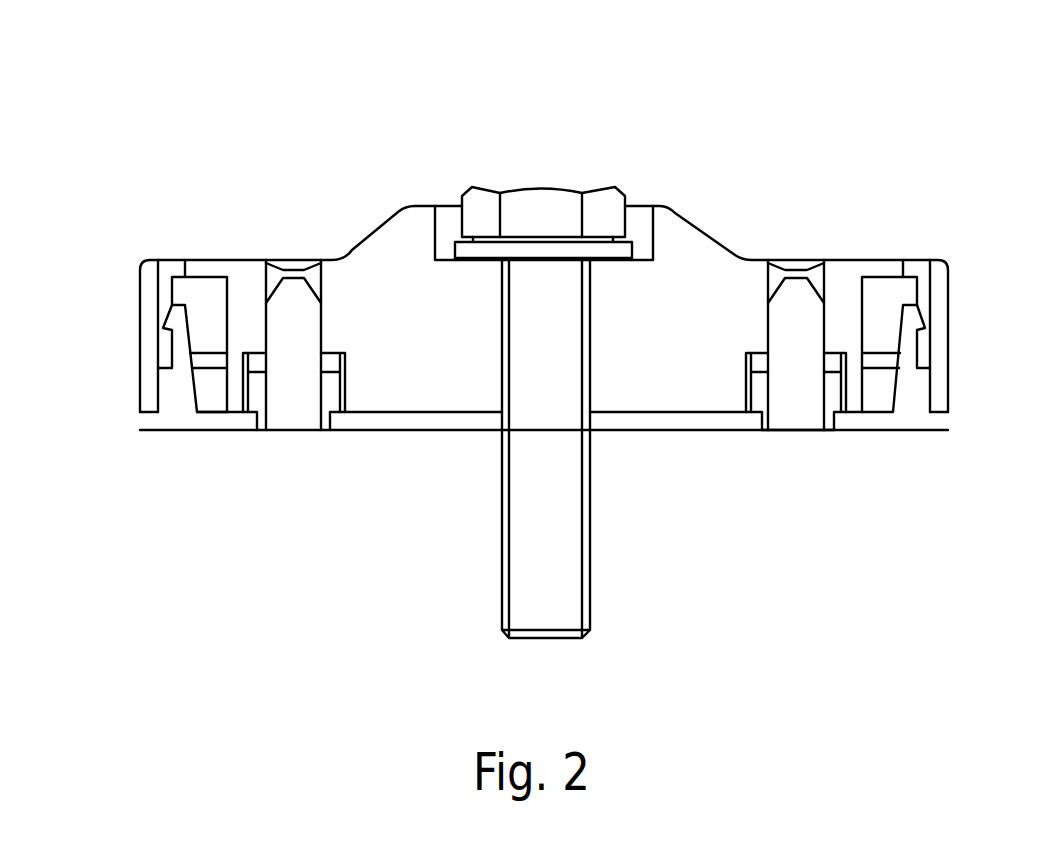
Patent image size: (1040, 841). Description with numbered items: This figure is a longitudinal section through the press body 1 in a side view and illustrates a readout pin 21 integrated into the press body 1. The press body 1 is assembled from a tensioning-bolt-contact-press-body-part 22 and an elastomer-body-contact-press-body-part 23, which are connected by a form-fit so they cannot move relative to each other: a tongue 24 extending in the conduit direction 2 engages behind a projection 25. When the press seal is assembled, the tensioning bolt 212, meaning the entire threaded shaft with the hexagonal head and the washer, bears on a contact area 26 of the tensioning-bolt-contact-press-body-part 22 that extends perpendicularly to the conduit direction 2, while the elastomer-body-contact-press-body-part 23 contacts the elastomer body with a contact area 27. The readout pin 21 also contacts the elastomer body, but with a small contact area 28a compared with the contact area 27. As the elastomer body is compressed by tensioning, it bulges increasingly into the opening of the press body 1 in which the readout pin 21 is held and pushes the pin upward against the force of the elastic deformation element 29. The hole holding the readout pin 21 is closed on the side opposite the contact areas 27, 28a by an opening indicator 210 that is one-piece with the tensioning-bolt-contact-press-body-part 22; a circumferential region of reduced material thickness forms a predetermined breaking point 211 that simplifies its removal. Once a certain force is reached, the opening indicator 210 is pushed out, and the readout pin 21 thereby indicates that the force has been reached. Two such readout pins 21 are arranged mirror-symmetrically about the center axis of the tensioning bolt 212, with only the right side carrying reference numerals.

The press body 1 is at (271, 166).
The conduit direction 2 is at (545, 133).
The readout pin 21 is at (803, 333).
The tensioning-bolt-contact-press-body-part 22 is at (700, 280).
The elastomer-body-contact-press-body-part 23 is at (655, 424).
The tongue 24 is at (905, 350).
The projection 25 is at (928, 343).
The contact area 26 is at (603, 250).
The contact area 27 is at (627, 434).
The contact area 28a is at (794, 434).
The elastic deformation element 29 is at (832, 363).
The opening indicator 210 is at (793, 265).
The predetermined breaking point 211 is at (829, 248).
The tensioning bolt 212 is at (543, 318).